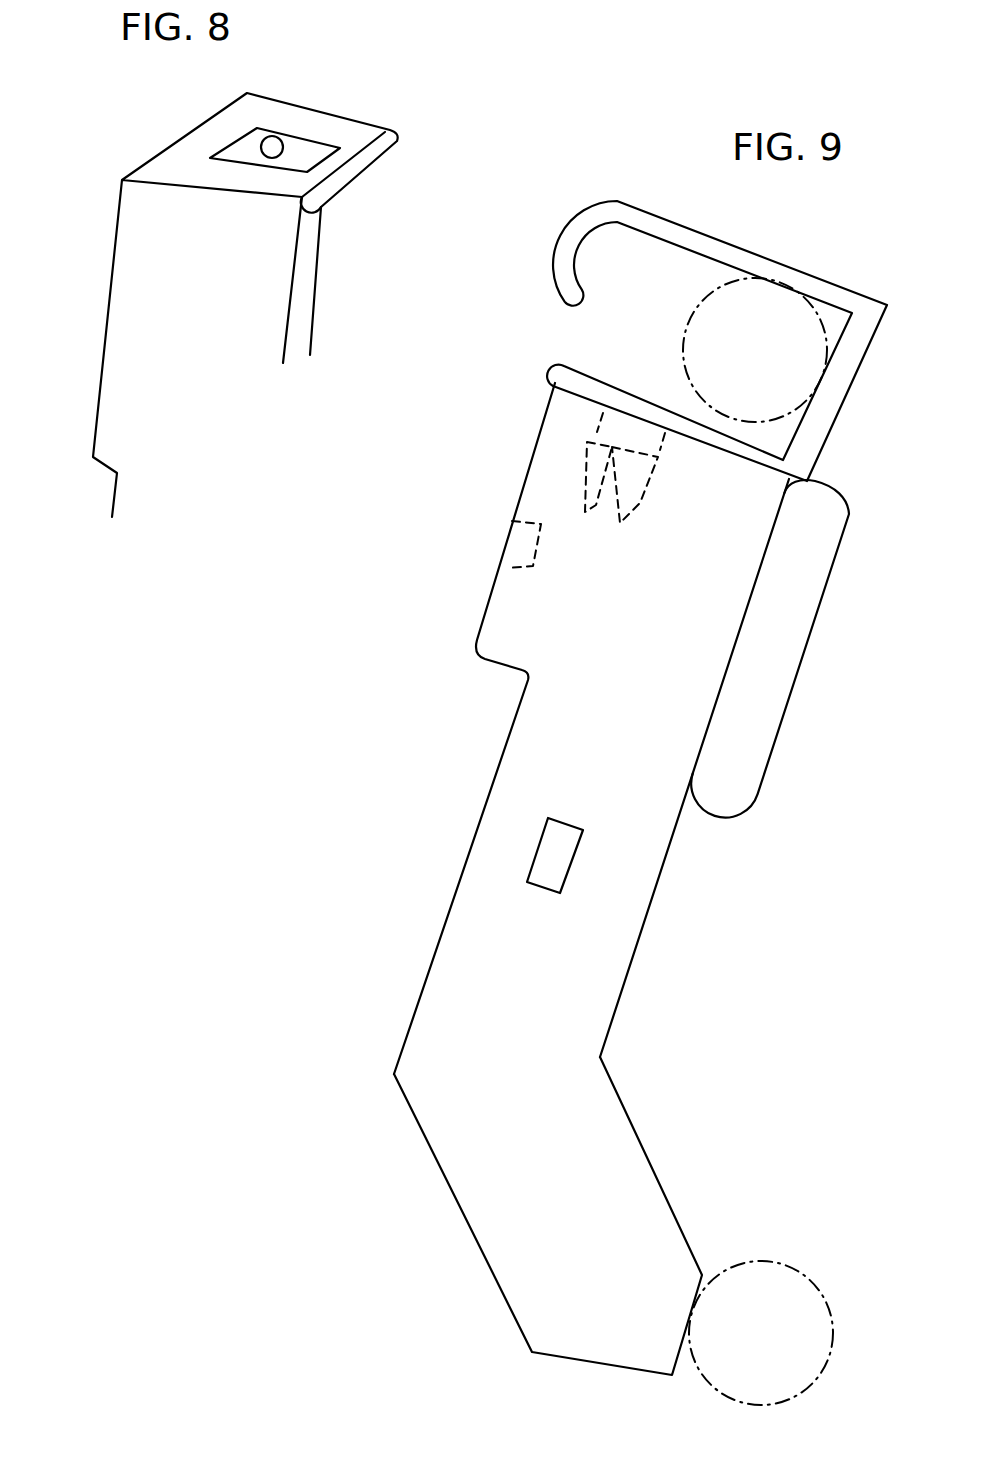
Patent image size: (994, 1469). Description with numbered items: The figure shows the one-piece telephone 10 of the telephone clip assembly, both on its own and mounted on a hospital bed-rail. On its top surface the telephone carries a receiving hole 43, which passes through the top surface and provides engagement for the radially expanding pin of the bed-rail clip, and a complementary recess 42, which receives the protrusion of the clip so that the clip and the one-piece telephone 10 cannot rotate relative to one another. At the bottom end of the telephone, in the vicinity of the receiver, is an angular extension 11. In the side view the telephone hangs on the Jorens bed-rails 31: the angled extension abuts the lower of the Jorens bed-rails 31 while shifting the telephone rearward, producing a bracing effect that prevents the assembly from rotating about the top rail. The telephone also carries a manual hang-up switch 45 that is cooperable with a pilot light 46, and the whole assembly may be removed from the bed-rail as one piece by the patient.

In FIG. 8, the one-piece telephone 10 is at (127, 347).
In FIG. 9, the one-piece telephone 10 is at (600, 948).
In FIG. 9, the angular extension 11 is at (451, 1190).
In FIG. 9, the Jorens bed-rails 31 is at (795, 373).
In FIG. 8, the complementary recess 42 is at (313, 150).
In FIG. 8, the receiving hole 43 is at (273, 142).
In FIG. 9, the manual hang-up switch 45 is at (557, 866).
In FIG. 9, the pilot light 46 is at (523, 540).